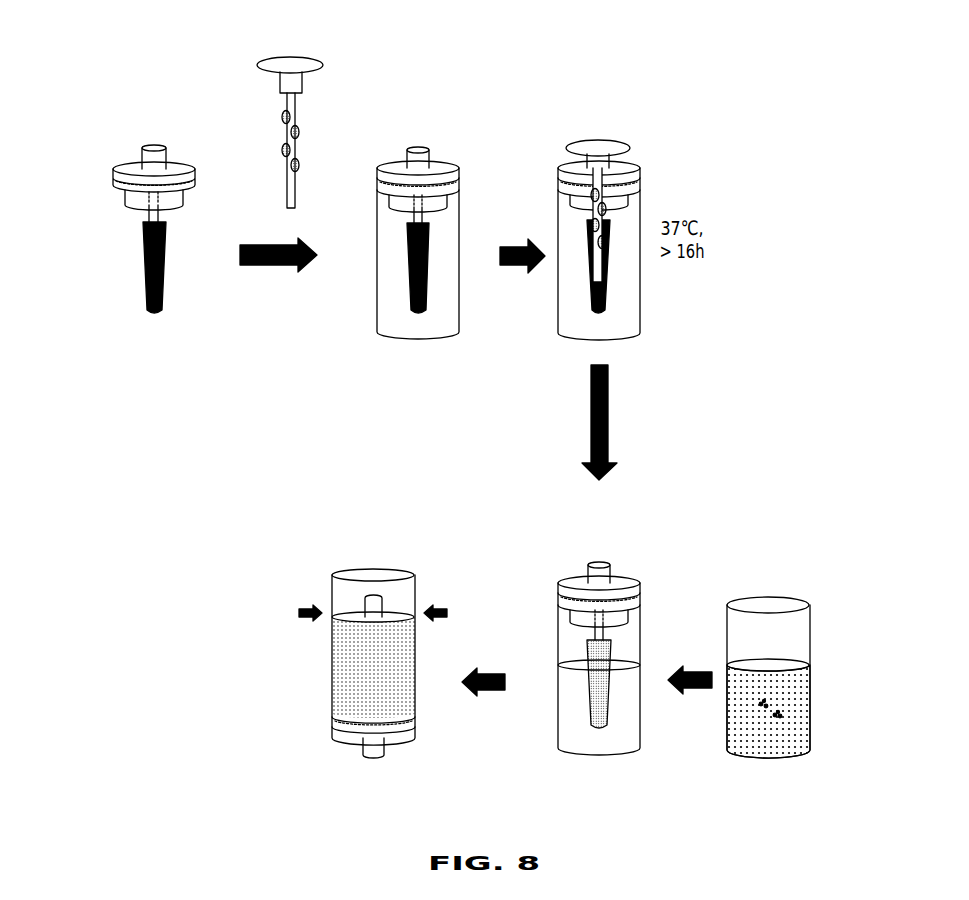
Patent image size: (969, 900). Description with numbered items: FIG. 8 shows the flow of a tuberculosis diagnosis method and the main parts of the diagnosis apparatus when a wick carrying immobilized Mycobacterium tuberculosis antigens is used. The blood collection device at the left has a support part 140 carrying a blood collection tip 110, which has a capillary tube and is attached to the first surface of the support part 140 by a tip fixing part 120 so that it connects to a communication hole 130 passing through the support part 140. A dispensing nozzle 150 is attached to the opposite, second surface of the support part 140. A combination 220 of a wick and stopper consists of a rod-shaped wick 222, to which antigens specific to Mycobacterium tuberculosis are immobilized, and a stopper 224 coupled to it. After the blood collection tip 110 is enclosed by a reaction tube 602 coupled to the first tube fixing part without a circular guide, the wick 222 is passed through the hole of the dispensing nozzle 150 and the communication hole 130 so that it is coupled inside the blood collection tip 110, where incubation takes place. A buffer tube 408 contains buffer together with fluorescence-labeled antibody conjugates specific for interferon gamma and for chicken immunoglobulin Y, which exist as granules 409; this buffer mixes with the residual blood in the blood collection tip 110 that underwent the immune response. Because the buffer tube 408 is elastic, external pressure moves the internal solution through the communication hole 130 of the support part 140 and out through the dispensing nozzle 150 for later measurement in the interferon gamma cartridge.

The blood collection tip 110 is at (162, 278).
The tip fixing part 120 is at (143, 217).
The communication hole 130 is at (163, 202).
The support part 140 is at (198, 170).
The dispensing nozzle 150 is at (151, 143).
The combination of a wick and stopper 220 is at (453, 156).
The wick 222 is at (296, 118).
The stopper 224 is at (312, 63).
The reaction tube 602 is at (459, 318).
The buffer tube 408 is at (642, 667).
The granules 409 is at (782, 715).